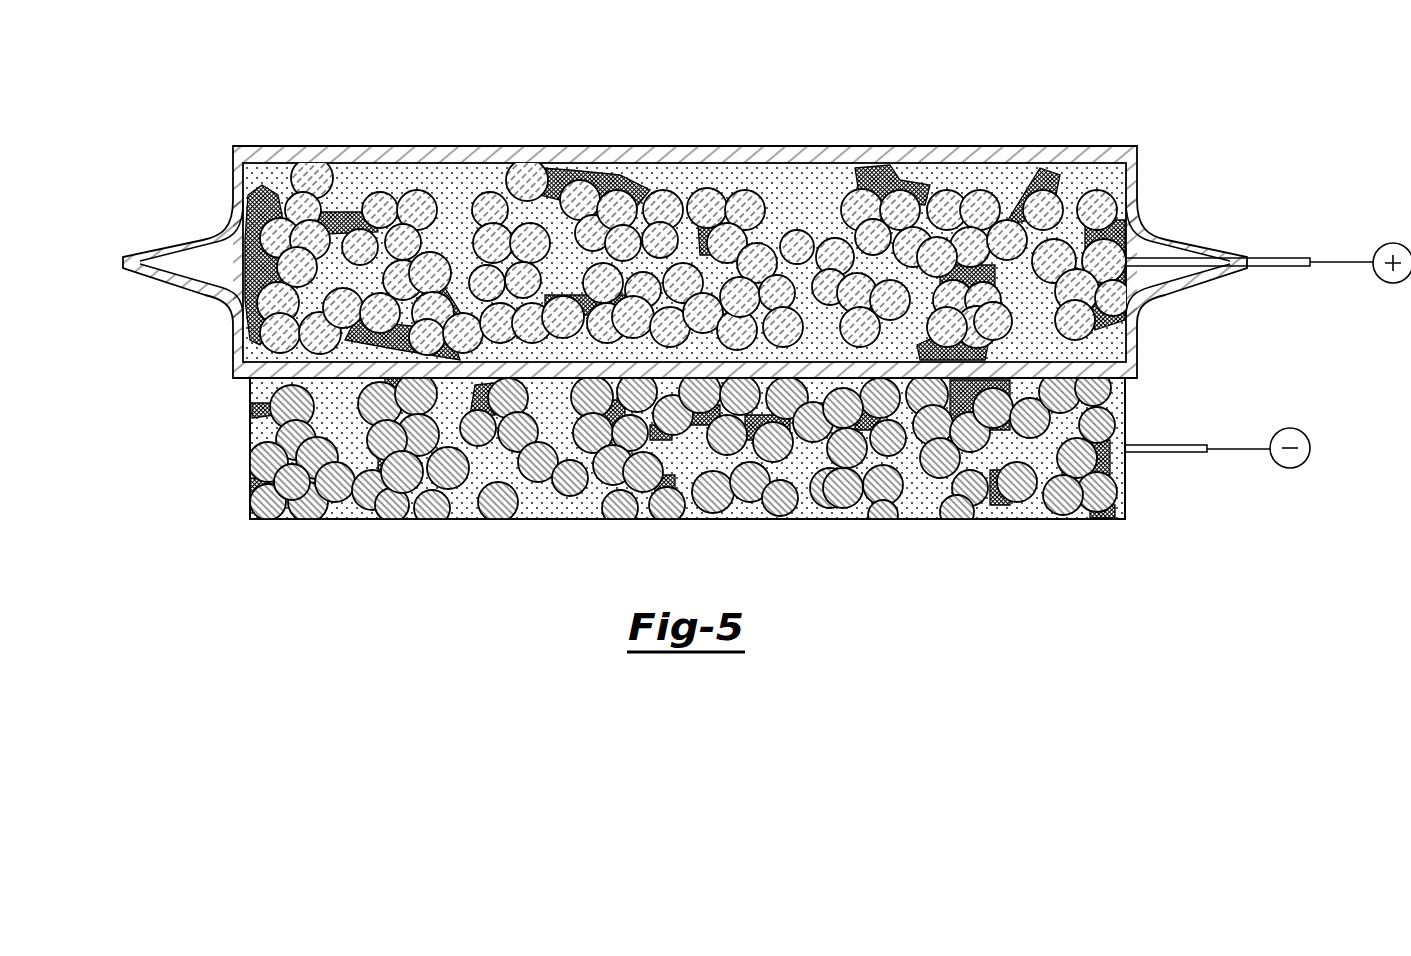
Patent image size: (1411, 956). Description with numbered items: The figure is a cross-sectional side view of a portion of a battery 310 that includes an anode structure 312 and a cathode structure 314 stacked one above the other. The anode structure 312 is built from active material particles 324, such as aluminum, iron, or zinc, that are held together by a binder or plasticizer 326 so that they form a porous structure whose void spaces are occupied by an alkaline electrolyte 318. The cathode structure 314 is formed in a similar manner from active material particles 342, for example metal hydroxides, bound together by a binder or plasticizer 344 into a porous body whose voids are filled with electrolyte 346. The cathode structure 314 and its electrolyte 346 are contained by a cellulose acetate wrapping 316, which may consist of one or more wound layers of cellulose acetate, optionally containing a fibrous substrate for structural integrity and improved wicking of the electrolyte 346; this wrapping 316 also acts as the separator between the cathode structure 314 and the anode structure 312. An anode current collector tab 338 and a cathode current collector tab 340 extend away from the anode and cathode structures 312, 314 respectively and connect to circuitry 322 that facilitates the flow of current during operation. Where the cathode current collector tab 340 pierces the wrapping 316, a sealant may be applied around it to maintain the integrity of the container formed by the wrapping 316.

The battery 310 is at (226, 582).
The anode structure 312 is at (200, 377).
The cathode structure 314 is at (123, 147).
The cellulose acetate wrapping 316 is at (279, 147).
The electrolyte 318 is at (547, 422).
The circuitry 322 is at (1343, 266).
The active material particles 324 is at (283, 400).
The binder or plasticizer 326 is at (410, 506).
The anode current collector tab 338 is at (1175, 445).
The cathode current collector tab 340 is at (1280, 257).
The active material particles 342 is at (312, 166).
The binder or plasticizer 344 is at (482, 302).
The electrolyte 346 is at (440, 180).